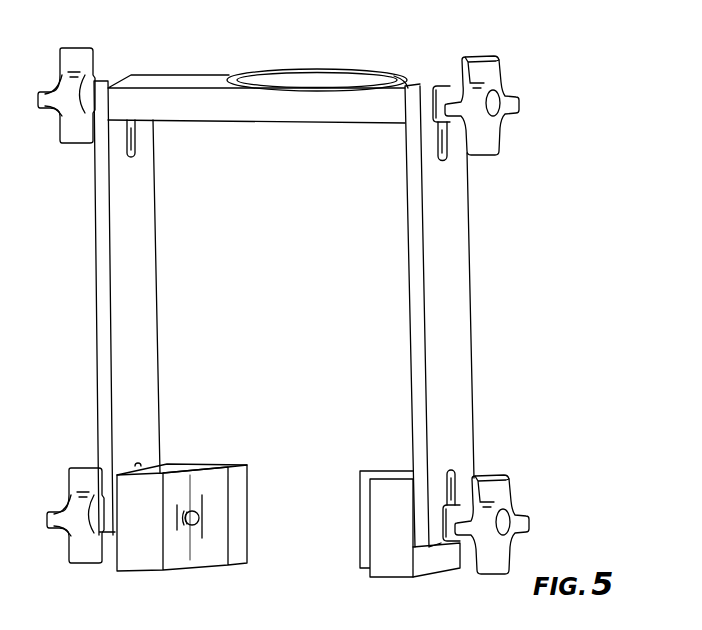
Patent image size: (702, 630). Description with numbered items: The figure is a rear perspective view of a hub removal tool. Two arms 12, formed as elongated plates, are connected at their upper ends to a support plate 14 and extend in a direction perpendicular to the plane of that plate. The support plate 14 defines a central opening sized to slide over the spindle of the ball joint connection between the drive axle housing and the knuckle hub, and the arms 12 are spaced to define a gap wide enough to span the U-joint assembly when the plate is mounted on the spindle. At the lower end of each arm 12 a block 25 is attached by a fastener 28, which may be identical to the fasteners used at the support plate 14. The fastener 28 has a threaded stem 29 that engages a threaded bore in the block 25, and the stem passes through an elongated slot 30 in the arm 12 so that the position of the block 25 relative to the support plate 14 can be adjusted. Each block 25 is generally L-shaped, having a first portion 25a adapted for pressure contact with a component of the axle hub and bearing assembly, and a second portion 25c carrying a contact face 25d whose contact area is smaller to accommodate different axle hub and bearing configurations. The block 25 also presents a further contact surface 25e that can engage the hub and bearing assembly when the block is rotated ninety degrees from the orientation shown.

The arm 12 is at (450, 304).
The support plate 14 is at (385, 82).
The block 25 is at (211, 501).
The first portion 25a is at (247, 492).
The second portion 25c is at (390, 515).
The contact face 25d is at (391, 560).
The contact surface 25e is at (168, 470).
The fastener 28 is at (63, 482).
The threaded stem 29 is at (192, 523).
The elongated slot 30 is at (452, 483).